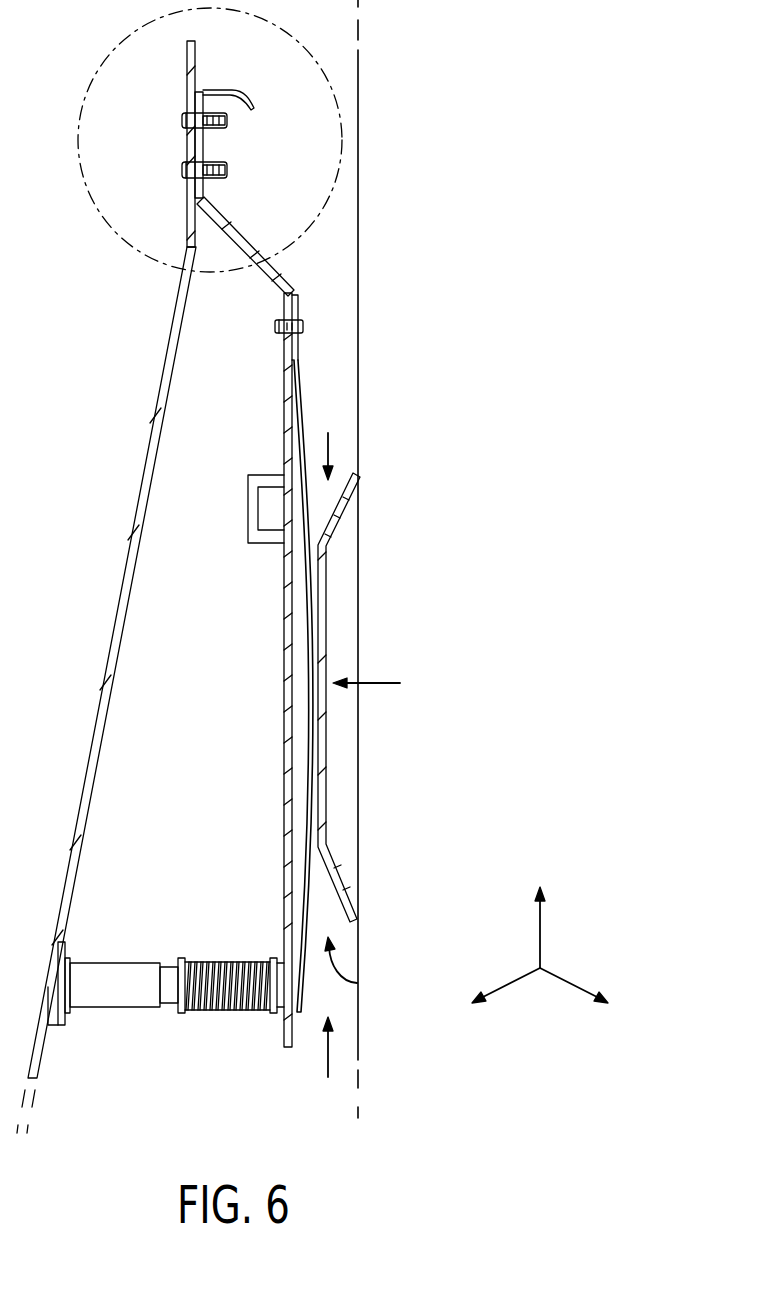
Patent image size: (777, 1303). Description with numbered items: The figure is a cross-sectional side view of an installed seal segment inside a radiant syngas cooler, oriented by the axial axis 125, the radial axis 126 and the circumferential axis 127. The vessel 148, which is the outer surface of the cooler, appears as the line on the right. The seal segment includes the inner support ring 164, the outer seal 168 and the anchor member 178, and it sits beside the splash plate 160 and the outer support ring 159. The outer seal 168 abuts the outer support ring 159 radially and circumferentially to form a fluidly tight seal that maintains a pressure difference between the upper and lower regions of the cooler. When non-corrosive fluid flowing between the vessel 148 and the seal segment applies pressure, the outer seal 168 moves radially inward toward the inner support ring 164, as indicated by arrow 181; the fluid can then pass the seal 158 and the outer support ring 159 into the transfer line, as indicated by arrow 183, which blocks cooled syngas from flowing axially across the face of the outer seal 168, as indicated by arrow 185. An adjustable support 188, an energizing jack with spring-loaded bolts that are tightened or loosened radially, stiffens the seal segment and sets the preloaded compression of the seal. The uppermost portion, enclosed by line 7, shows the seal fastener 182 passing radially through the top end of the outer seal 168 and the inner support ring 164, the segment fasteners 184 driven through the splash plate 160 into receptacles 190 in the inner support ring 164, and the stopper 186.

The line 7- 7 is at (278, 25).
The axial axis 125 is at (540, 935).
The radial axis 126 is at (572, 980).
The circumferential axis 127 is at (512, 983).
The vessel 148 is at (358, 121).
The seal 158 is at (357, 983).
The outer support ring 159 is at (342, 540).
The splash plate 160 is at (150, 424).
The inner support ring 164 is at (250, 240).
The outer seal 168 is at (307, 415).
The anchor member 178 is at (250, 510).
The arrow 181 is at (375, 683).
The seal fastener 182 is at (303, 327).
The arrow 183 is at (328, 450).
The segment fasteners 184 is at (183, 170).
The arrow 185 is at (328, 1052).
The stopper 186 is at (228, 90).
The adjustable support 188 is at (120, 1000).
The receptacles 190 is at (228, 170).